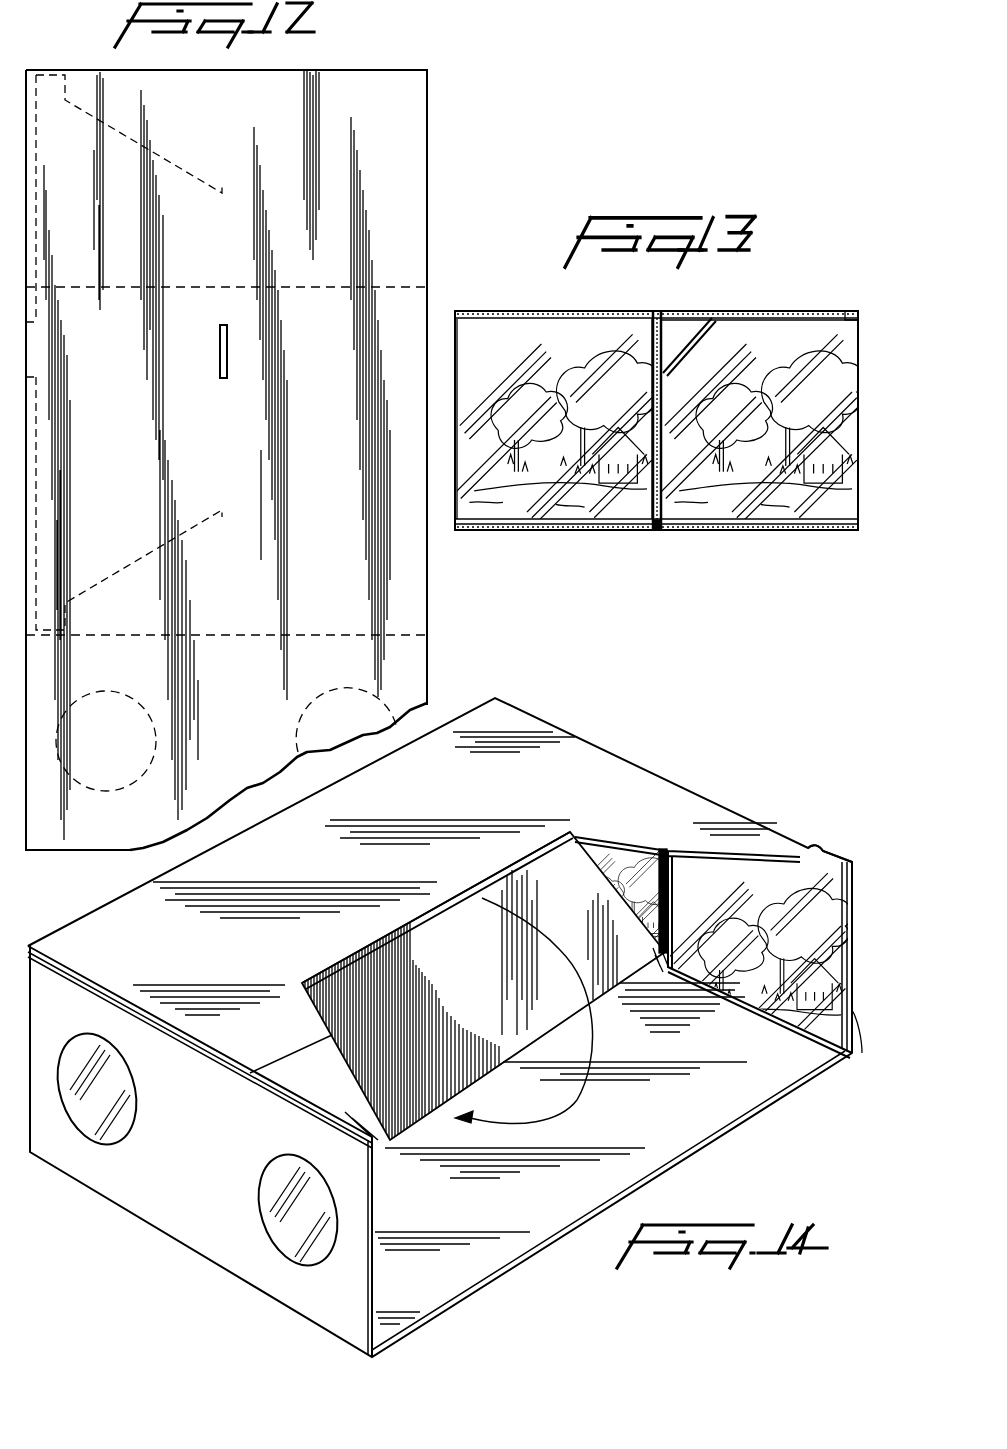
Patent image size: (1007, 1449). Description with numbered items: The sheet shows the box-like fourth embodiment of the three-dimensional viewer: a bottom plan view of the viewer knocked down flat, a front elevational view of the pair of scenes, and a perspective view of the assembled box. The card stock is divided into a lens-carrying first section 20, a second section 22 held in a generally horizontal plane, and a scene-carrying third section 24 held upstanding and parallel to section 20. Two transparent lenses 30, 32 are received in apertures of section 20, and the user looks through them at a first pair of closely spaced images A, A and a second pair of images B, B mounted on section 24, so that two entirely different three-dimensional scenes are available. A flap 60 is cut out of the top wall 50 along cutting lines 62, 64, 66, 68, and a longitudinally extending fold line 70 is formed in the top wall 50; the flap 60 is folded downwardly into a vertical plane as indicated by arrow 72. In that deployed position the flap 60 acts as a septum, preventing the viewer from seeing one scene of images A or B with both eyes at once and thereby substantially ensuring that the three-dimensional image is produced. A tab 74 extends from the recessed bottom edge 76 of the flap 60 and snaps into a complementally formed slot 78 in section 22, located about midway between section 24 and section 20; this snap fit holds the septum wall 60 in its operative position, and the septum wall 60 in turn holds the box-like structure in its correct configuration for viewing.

In FIG. 14, the first section 20 is at (170, 1217).
In FIG. 12, the second section 22 is at (407, 186).
In FIG. 13, the second section 22 is at (780, 530).
In FIG. 14, the second section 22 is at (700, 1142).
In FIG. 14, the third section 24 is at (855, 1020).
In FIG. 12, the 3-D lens 30 is at (113, 693).
In FIG. 14, the 3-D lens 30 is at (93, 1112).
In FIG. 12, the 3-D lens 32 is at (333, 695).
In FIG. 14, the 3-D lens 32 is at (287, 1225).
In FIG. 13, the top wall 50 is at (640, 312).
In FIG. 14, the top wall 50 is at (610, 768).
In FIG. 12, the flap 60 is at (172, 160).
In FIG. 13, the flap 60 is at (712, 320).
In FIG. 14, the flap 60 is at (472, 943).
In FIG. 14, the cutting line 62 is at (385, 1137).
In FIG. 14, the cutting line 64 is at (248, 1077).
In FIG. 13, the cutting line 66 is at (770, 312).
In FIG. 14, the cutting line 66 is at (703, 853).
In FIG. 14, the cutting line 68 is at (806, 850).
In FIG. 13, the fold line 70 is at (660, 312).
In FIG. 14, the fold line 70 is at (423, 913).
In FIG. 14, the arrow 72 is at (577, 1100).
In FIG. 12, the tab 74 is at (28, 370).
In FIG. 13, the tab 74 is at (660, 530).
In FIG. 14, the tab 74 is at (405, 1105).
In FIG. 12, the recessed bottom edge 76 is at (33, 215).
In FIG. 12, the slot 78 is at (227, 352).
In FIG. 13, the slot 78 is at (652, 530).
In FIG. 14, the slot 78 is at (405, 1105).
In FIG. 13, the 3-D image A is at (822, 338).
In FIG. 14, the 3-D image A is at (800, 1010).
In FIG. 13, the 3-D image B is at (503, 333).
In FIG. 14, the 3-D image B is at (643, 847).